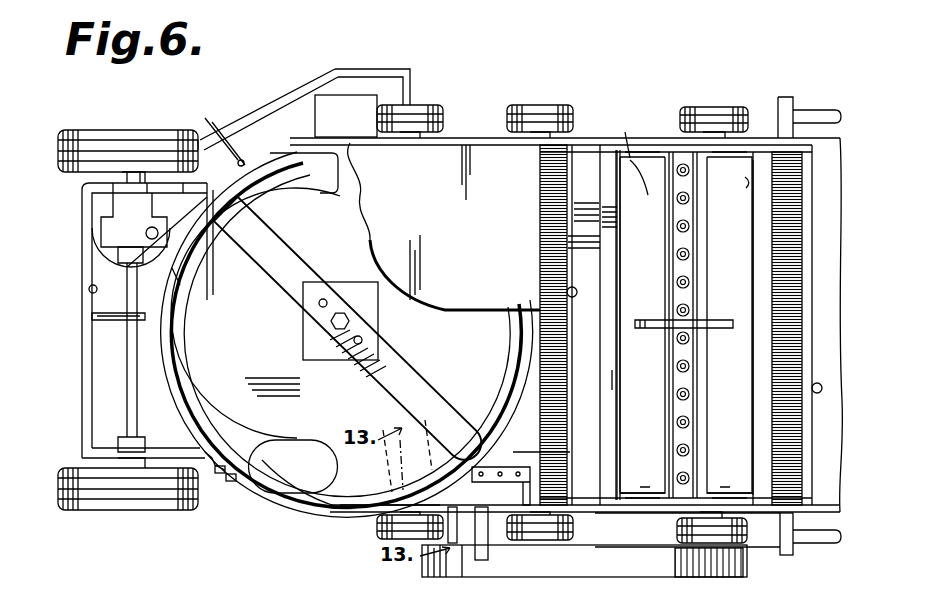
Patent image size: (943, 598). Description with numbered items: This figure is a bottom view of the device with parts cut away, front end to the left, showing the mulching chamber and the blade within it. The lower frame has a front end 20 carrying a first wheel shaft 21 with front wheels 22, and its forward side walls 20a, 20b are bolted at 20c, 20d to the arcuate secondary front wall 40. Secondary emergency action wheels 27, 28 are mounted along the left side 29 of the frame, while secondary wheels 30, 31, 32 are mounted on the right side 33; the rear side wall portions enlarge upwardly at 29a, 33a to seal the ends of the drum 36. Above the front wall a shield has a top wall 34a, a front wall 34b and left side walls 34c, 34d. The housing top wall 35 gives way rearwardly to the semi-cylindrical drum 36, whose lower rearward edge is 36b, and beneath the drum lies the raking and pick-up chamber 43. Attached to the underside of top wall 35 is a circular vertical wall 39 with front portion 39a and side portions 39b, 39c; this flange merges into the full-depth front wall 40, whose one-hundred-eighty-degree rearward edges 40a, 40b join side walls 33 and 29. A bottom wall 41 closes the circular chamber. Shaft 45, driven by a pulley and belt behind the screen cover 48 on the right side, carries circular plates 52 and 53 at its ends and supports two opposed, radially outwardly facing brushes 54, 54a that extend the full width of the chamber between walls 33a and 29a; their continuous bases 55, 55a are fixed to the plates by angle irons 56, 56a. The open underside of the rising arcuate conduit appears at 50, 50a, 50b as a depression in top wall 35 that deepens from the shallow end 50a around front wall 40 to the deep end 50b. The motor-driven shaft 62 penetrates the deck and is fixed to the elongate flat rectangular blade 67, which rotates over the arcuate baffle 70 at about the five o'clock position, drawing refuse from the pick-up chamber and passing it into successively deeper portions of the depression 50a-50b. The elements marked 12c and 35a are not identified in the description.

The drive link 12c is at (172, 275).
The front end 20 is at (82, 333).
The forward side wall 20a is at (188, 448).
The forward side wall 20b is at (190, 248).
The bolt 20c is at (233, 482).
The bolt 20d is at (212, 130).
The first wheel shaft 21 is at (125, 386).
The front wheels 22 is at (60, 130).
The secondary emergency action wheel 27 is at (572, 105).
The secondary emergency action wheel 28 is at (742, 115).
The left side 29 is at (484, 140).
The enlarged side wall portion 29a is at (650, 143).
The secondary wheel 30 is at (370, 538).
The secondary wheel 31 is at (560, 540).
The secondary wheel 32 is at (797, 534).
The right side 33 is at (490, 545).
The enlarged side wall portion 33a is at (646, 515).
The top wall 34a is at (100, 270).
The front wall 34b is at (89, 295).
The left side wall 34c is at (296, 92).
The left side wall 34d is at (378, 70).
The top wall 35 is at (558, 453).
The side rail 35a is at (826, 148).
The drum 36 is at (568, 292).
The lower rearward edge 36b is at (812, 388).
The circular vertical wall 39 is at (508, 395).
The front portion 39a is at (212, 345).
The side portion 39b is at (355, 505).
The side portion 39c is at (362, 165).
The secondary front wall 40 is at (178, 332).
The rearward edge 40a is at (328, 512).
The rearward edge 40b is at (379, 116).
The bottom wall 41 is at (448, 305).
The raking chamber 43 is at (801, 433).
The shaft 45 is at (680, 230).
The pulley/belt screen cover 48 is at (745, 565).
The open underside of rising wall 50 is at (212, 362).
The shallow end 50a is at (335, 175).
The deep end 50b is at (293, 466).
The circular plate 52 is at (642, 322).
The circular plate 53 is at (660, 492).
The brush 54 is at (735, 328).
The brush 54a is at (612, 378).
The brush base 55 is at (758, 226).
The brush base 55a is at (617, 265).
The angle iron 56 is at (745, 177).
The angle iron 56a is at (644, 189).
The shaft 62 is at (342, 316).
The blade 67 is at (375, 370).
The baffle 70 is at (407, 456).